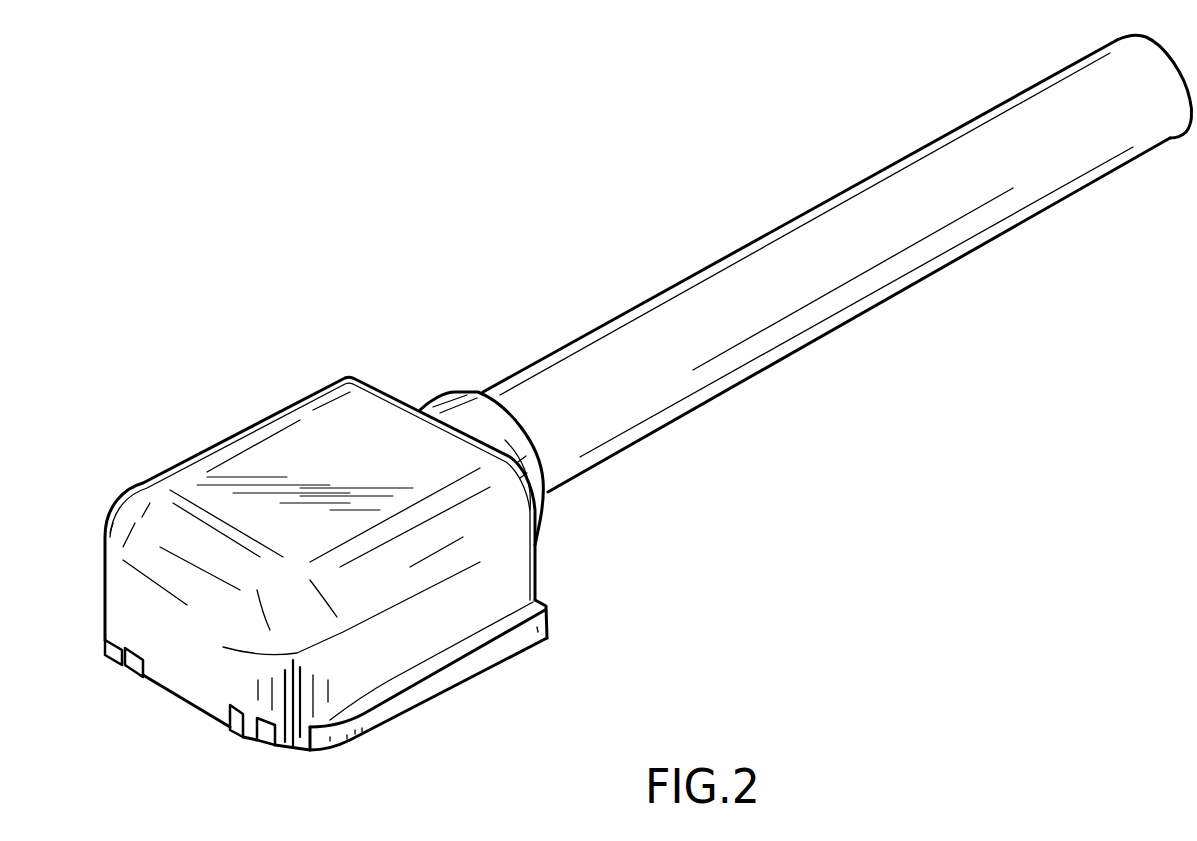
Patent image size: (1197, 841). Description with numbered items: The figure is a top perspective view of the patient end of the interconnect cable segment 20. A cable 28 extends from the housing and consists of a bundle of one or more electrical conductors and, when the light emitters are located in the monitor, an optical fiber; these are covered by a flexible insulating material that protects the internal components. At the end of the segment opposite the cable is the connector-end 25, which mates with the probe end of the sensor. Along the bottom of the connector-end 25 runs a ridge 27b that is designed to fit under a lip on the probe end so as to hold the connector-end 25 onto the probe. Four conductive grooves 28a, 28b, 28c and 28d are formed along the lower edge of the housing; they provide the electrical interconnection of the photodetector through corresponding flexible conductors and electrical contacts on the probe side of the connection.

The interconnect cable segment 20 is at (372, 602).
The connector-end 25 is at (447, 632).
The ridge 27b is at (412, 702).
The cable 28 is at (933, 183).
The conductive groove 28a is at (110, 660).
The conductive groove 28b is at (132, 677).
The conductive groove 28c is at (237, 735).
The conductive groove 28d is at (265, 748).